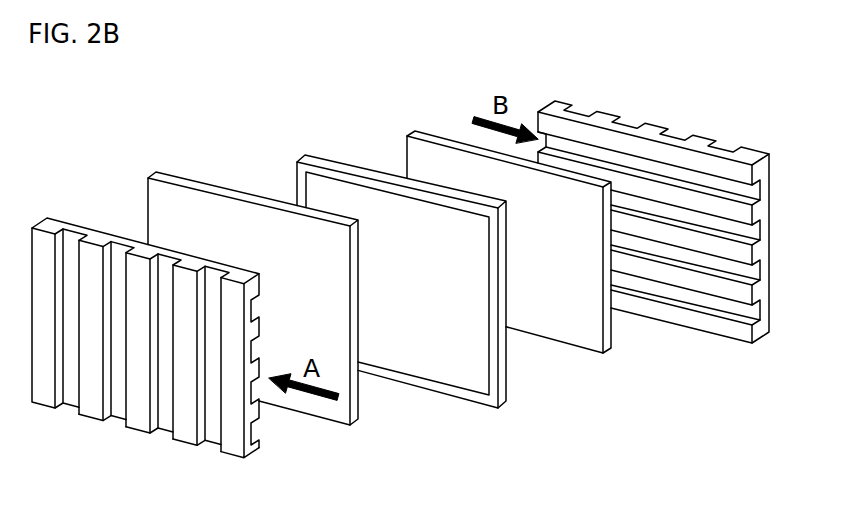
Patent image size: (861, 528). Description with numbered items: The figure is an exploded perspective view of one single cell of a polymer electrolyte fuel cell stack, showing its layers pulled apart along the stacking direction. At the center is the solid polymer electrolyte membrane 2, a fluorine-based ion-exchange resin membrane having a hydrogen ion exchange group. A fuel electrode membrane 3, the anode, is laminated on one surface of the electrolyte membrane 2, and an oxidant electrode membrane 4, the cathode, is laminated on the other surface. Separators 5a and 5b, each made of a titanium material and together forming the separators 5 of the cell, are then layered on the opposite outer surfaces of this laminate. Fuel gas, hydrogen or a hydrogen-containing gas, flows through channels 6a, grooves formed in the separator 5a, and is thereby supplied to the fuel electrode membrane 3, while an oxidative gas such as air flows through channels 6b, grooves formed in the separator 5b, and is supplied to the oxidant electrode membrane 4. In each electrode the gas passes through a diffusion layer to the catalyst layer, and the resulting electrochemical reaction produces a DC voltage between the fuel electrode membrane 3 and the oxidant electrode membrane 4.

The solid polymer electrolyte membrane 2 is at (338, 180).
The fuel electrode membrane 3 is at (218, 218).
The oxidant electrode membrane 4 is at (438, 170).
The separator 5 is at (44, 385).
The separator 5a is at (120, 250).
The separator 5b is at (590, 112).
The channels 6a is at (257, 422).
The channels 6b is at (752, 268).